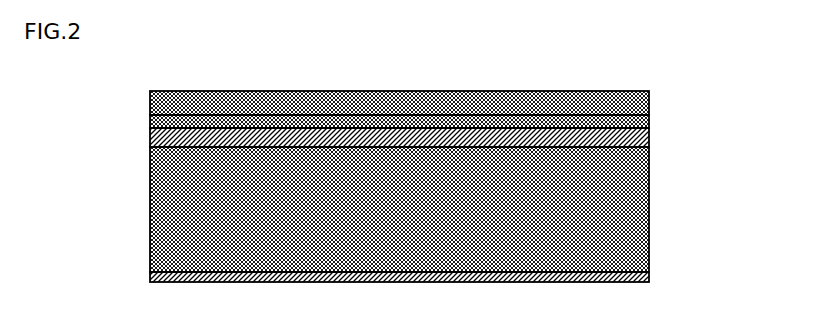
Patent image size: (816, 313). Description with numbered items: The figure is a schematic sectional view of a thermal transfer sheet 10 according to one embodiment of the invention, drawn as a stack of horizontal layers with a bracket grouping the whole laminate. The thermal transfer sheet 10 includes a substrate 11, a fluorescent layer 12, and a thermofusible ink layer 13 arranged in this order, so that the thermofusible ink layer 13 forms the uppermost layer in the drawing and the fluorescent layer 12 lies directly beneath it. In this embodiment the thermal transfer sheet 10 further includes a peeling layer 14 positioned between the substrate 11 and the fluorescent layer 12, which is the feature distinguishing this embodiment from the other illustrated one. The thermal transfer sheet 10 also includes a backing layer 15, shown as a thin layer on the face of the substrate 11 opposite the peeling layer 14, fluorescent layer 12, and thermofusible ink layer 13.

The thermal transfer sheet 10 is at (399, 173).
The substrate 11 is at (649, 208).
The fluorescent layer 12 is at (649, 117).
The thermofusible ink layer 13 is at (628, 90).
The peeling layer 14 is at (649, 138).
The backing layer 15 is at (649, 271).